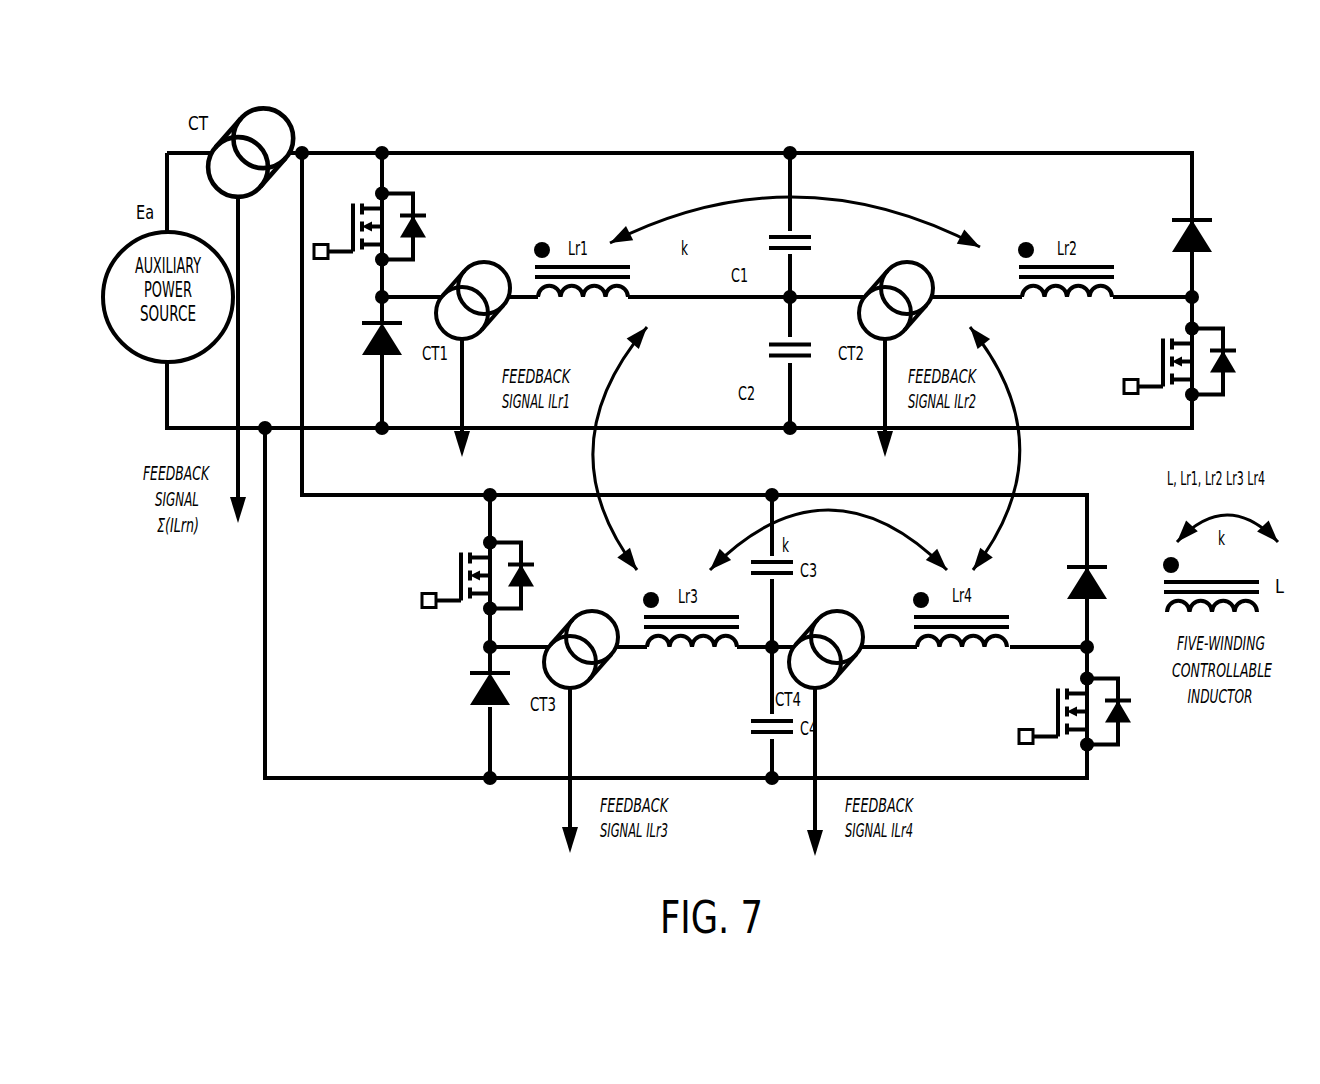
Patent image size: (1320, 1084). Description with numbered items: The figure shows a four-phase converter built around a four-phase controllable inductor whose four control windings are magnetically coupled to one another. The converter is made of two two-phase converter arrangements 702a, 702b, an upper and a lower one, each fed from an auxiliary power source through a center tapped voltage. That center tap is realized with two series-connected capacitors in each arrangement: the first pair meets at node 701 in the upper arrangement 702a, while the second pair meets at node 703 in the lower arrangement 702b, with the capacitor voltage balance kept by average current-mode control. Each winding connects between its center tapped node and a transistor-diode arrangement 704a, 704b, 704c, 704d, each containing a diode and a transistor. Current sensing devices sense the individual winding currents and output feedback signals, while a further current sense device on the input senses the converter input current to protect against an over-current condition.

The node 701 is at (797, 292).
The node 703 is at (782, 638).
The two-phase converter arrangement 702a is at (1140, 138).
The two-phase converter arrangement 702b is at (1038, 795).
The transistor-diode arrangement 704a is at (428, 260).
The transistor-diode arrangement 704b is at (1227, 270).
The transistor-diode arrangement 704c is at (413, 633).
The transistor-diode arrangement 704d is at (1107, 613).